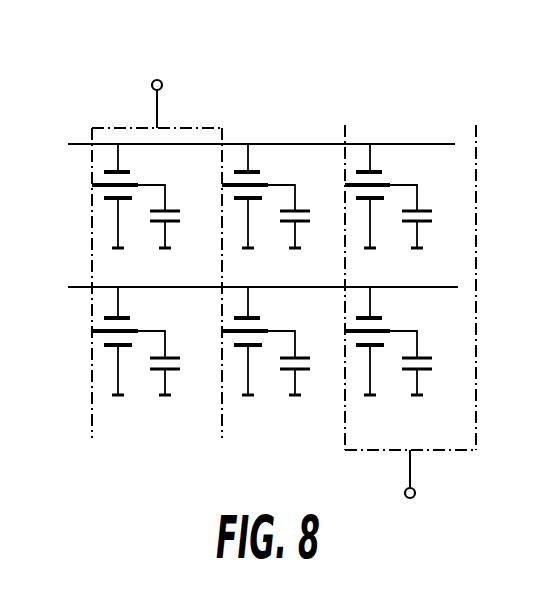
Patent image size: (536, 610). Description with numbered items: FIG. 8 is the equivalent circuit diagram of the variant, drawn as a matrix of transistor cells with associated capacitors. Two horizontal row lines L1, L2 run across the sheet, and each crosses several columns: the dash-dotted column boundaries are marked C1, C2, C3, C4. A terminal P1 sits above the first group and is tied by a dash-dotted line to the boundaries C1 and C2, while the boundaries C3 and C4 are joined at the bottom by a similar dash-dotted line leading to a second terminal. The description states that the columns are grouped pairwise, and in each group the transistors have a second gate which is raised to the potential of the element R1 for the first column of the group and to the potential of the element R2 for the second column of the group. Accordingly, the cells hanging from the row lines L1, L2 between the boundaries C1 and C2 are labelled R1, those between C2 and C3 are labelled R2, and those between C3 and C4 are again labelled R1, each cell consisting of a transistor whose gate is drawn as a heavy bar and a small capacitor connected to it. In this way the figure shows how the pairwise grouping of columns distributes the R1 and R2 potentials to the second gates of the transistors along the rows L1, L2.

The row line L1 is at (241, 144).
The row line L2 is at (239, 287).
The column C1 is at (82, 296).
The column C2 is at (212, 296).
The column C3 is at (341, 278).
The column C4 is at (415, 302).
The terminal P1 is at (157, 92).
The element R1 is at (262, 284).
The element R2 is at (266, 284).